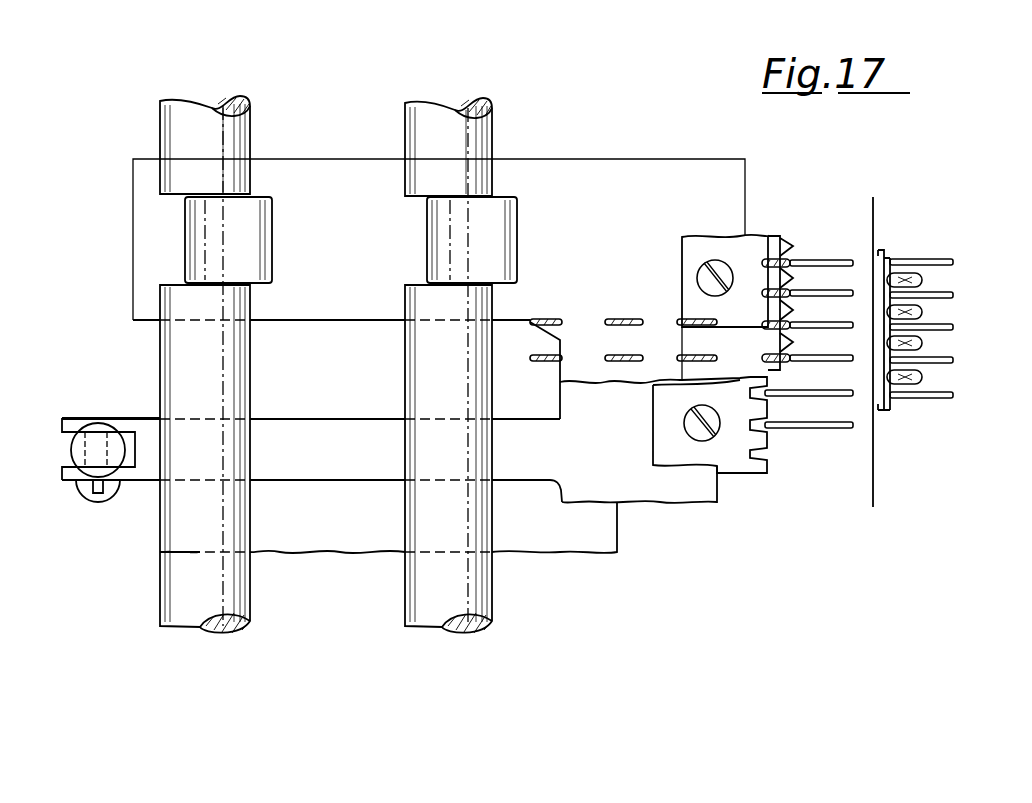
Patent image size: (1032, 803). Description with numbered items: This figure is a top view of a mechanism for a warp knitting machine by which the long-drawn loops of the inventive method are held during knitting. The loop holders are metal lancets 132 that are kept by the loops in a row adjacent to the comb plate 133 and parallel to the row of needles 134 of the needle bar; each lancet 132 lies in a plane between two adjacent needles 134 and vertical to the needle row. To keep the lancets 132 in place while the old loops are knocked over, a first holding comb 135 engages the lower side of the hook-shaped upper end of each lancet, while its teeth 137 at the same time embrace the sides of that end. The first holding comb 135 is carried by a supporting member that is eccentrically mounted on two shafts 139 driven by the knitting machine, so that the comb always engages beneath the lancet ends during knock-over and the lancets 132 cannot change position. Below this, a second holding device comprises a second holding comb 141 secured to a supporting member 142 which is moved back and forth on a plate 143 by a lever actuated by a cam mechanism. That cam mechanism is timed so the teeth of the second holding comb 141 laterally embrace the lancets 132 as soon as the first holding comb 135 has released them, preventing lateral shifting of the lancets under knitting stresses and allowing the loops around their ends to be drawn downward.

The lancets 132 is at (827, 327).
The comb plate 133 is at (880, 250).
The needles 134 is at (925, 312).
The first holding comb 135 is at (725, 240).
The teeth 137 is at (793, 242).
The shafts 139 is at (433, 580).
The second holding comb 141 is at (732, 448).
The supporting member 142 is at (615, 465).
The plate 143 is at (553, 518).